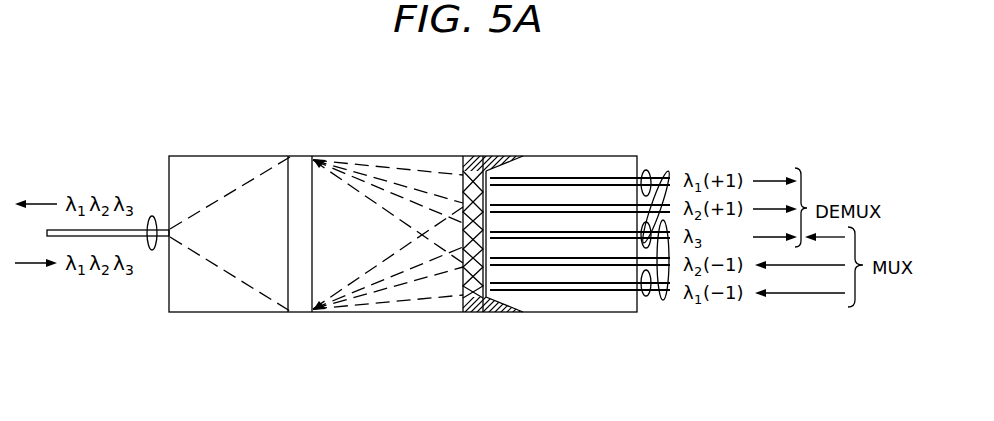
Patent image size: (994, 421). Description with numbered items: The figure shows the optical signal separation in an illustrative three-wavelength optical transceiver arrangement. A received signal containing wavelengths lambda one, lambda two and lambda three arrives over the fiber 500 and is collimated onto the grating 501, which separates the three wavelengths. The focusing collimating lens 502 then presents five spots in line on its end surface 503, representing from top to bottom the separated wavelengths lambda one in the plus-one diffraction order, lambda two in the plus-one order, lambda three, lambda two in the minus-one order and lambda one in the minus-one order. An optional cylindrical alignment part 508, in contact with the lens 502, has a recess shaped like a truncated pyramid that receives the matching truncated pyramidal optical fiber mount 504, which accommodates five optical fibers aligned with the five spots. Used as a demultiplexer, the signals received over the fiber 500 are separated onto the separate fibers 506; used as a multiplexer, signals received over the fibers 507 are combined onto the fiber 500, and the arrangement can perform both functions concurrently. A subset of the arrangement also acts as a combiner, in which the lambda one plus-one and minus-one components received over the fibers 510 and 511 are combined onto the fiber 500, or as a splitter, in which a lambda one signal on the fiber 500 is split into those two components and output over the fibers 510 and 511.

The fiber 500 is at (152, 216).
The grating 501 is at (300, 156).
The focusing collimating lens 502 is at (387, 156).
The end surface 503 is at (474, 248).
The optical fiber mount 504 is at (566, 156).
The separate fibers 506 is at (665, 170).
The fibers 507 is at (663, 300).
The cylindrical alignment part 508 is at (478, 156).
The fiber 510 is at (647, 170).
The fiber 511 is at (647, 297).